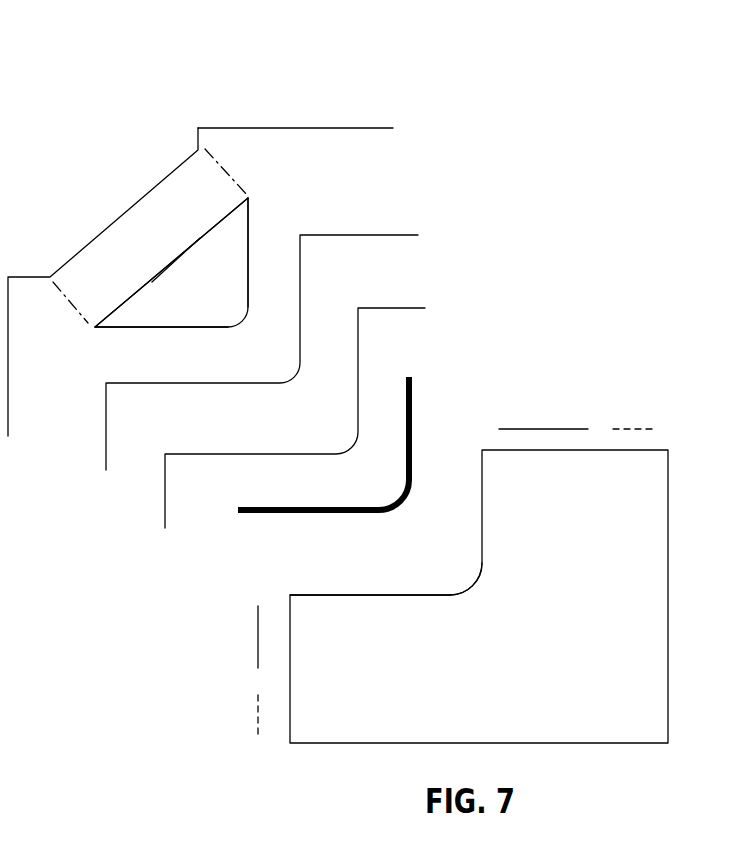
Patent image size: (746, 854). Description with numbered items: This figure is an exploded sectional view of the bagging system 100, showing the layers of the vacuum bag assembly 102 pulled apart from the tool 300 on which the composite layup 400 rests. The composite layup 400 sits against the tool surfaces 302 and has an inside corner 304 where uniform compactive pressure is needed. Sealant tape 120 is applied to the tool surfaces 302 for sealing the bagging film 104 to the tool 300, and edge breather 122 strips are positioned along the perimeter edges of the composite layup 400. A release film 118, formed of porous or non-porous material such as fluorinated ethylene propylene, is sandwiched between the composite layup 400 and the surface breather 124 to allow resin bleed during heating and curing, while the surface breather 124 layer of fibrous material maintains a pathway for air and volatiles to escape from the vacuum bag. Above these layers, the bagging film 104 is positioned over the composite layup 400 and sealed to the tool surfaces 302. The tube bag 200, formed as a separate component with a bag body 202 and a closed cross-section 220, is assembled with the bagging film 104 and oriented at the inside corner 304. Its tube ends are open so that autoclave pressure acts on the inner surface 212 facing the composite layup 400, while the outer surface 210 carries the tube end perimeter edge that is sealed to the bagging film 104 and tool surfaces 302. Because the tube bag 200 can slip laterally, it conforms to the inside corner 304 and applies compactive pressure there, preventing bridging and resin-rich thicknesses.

The bagging system 100 is at (540, 290).
The vacuum bag assembly 102 is at (335, 82).
The bagging film 104 is at (393, 128).
The release film 118 is at (392, 308).
The sealant tape 120 is at (633, 429).
The edge breather 122 is at (535, 429).
The surface breather 124 is at (387, 235).
The tube bag 200 is at (251, 193).
The bag body 202 is at (247, 268).
The outer surface 210 is at (130, 295).
The inner surface 212 is at (152, 282).
The closed cross-section 220 is at (190, 327).
The tool 300 is at (671, 597).
The tool surface 302 is at (348, 593).
The inside corner 304 is at (472, 582).
The composite layup 400 is at (415, 380).